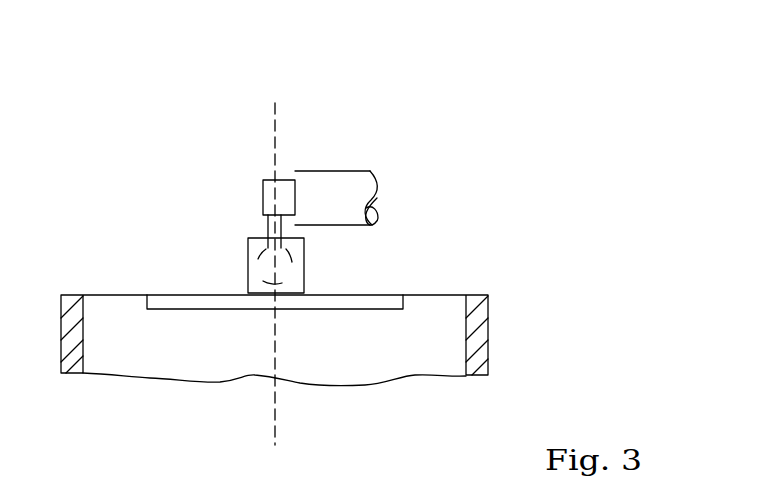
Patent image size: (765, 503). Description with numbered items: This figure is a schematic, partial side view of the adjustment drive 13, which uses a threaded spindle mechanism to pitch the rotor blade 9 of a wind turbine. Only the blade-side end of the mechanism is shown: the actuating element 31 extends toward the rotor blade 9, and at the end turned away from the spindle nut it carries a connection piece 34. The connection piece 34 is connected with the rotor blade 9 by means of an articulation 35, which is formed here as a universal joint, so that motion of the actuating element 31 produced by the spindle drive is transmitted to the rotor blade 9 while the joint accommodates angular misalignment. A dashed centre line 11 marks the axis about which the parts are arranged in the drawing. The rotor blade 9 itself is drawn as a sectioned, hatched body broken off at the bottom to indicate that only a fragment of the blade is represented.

The rotor blade 9 is at (486, 303).
The axis 11 is at (272, 413).
The adjustment drive 13 is at (275, 162).
The actuating element 31 is at (345, 173).
The connection piece 34 is at (262, 190).
The articulation 35 is at (246, 265).